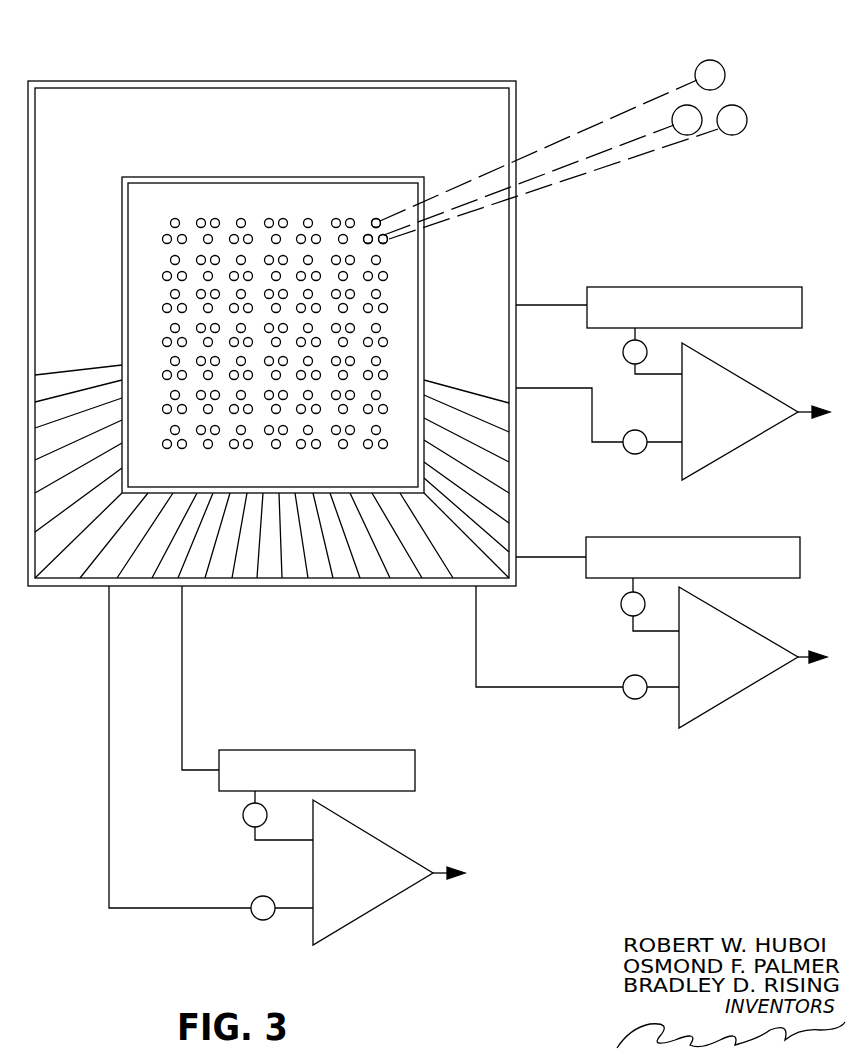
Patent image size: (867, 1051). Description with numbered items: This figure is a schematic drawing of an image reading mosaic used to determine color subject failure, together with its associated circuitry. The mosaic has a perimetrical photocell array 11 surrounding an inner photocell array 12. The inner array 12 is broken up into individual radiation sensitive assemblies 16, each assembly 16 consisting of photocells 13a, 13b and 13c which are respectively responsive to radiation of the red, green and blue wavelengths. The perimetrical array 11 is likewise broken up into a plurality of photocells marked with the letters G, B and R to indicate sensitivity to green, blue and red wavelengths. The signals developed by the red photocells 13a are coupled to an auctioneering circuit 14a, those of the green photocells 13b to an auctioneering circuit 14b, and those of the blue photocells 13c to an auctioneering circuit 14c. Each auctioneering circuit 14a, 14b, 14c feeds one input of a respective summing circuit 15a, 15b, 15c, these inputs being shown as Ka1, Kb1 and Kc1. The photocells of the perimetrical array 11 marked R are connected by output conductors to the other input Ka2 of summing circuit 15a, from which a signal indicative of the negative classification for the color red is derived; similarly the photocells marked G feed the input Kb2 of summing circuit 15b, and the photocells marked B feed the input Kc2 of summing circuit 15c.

The perimetrical photocell array 11 is at (227, 120).
The inner photocell array 12 is at (275, 193).
The radiation sensitive device 13a is at (698, 61).
The radiation sensitive device 13b is at (685, 135).
The radiation sensitive device 13c is at (747, 120).
The auctioneering circuit 14a is at (602, 297).
The auctioneering circuit 14b is at (788, 543).
The auctioneering circuit 14c is at (405, 762).
The summing circuit 15a is at (727, 378).
The summing circuit 15b is at (713, 617).
The summing circuit 15c is at (338, 828).
The radiation sensitive assembly 16 is at (395, 217).
The weighting element Ka1 is at (623, 350).
The input of summing circuit Ka2 is at (635, 452).
The weighting element Kb1 is at (621, 603).
The weighting element Kb2 is at (625, 696).
The weighting element Kc1 is at (243, 812).
The weighting element Kc2 is at (263, 918).